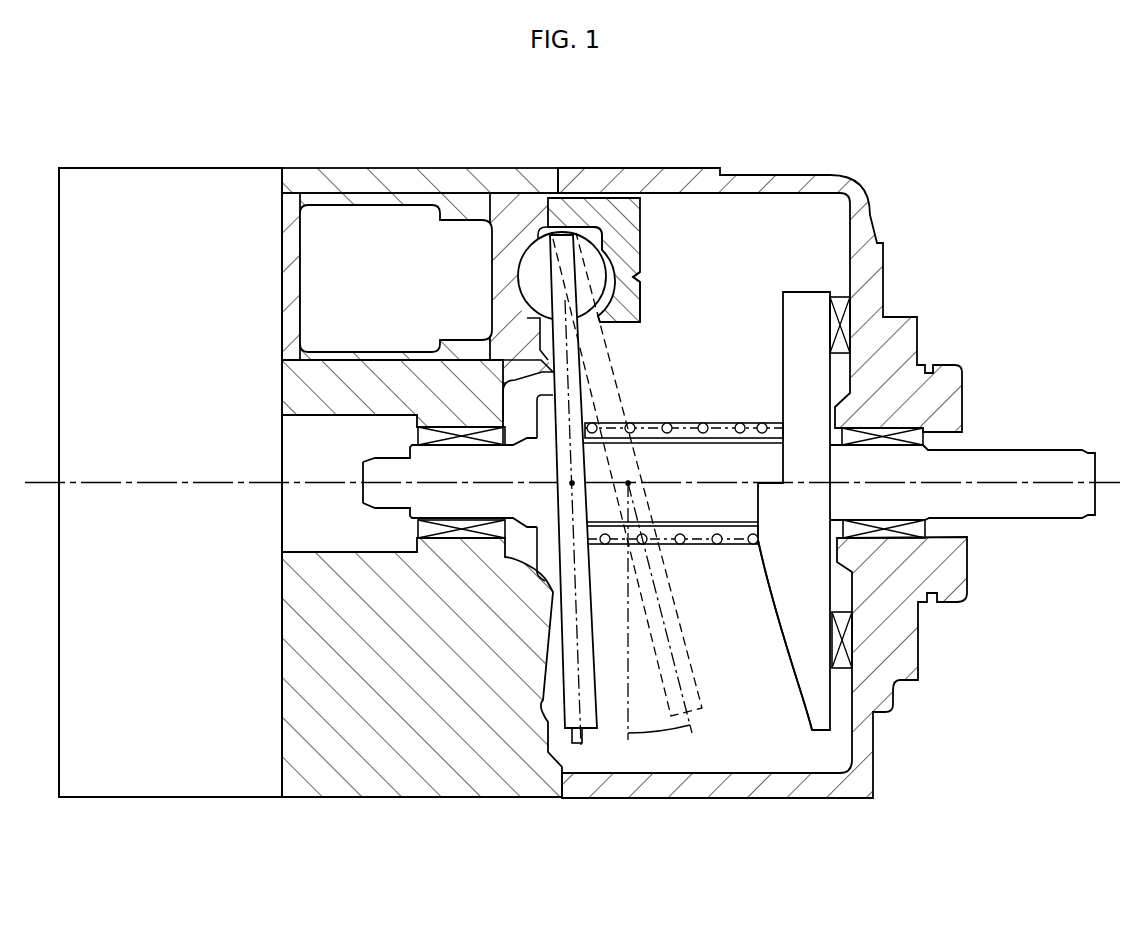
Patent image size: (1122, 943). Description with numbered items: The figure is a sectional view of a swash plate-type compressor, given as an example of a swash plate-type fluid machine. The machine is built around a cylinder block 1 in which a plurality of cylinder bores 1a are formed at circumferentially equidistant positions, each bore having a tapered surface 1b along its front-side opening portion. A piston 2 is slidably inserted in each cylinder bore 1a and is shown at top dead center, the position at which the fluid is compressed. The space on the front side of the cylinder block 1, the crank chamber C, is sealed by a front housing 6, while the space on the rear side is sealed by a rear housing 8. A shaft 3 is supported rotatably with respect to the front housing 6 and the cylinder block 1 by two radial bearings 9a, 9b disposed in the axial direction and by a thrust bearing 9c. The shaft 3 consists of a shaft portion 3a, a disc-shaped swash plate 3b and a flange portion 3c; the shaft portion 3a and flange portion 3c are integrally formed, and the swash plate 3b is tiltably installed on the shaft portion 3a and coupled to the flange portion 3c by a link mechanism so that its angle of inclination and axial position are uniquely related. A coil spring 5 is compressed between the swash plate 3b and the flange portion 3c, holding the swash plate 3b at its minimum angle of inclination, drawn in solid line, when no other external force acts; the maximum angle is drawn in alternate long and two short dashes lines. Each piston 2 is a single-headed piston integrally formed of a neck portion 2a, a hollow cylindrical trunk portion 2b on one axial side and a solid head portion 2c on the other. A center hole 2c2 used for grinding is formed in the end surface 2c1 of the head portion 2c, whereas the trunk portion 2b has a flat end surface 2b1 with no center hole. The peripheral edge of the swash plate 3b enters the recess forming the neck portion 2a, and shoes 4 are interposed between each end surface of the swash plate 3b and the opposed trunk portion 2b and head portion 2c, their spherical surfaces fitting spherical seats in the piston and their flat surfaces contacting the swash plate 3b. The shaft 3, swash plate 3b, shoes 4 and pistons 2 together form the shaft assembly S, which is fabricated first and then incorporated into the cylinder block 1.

The cylinder block 1 is at (395, 792).
The cylinder bore 1a is at (355, 205).
The tapered surface 1b is at (560, 190).
The piston 2 is at (422, 283).
The neck portion 2a is at (583, 213).
The trunk portion 2b is at (409, 196).
The end surface 2b1 is at (282, 232).
The head portion 2c is at (630, 230).
The end surface 2c1 is at (640, 300).
The center hole 2c2 is at (640, 277).
The shaft 3 is at (707, 571).
The shaft portion 3a is at (688, 432).
The swash plate 3b is at (578, 378).
The flange portion 3c is at (822, 733).
The shoe 4 is at (540, 255).
The coil spring 5 is at (717, 545).
The front housing 6 is at (760, 180).
The rear housing 8 is at (163, 168).
The radial bearing 9a is at (884, 538).
The radial bearing 9b is at (462, 532).
The thrust bearing 9c is at (840, 325).
The crank chamber C is at (751, 250).
The shaft assembly S is at (703, 600).